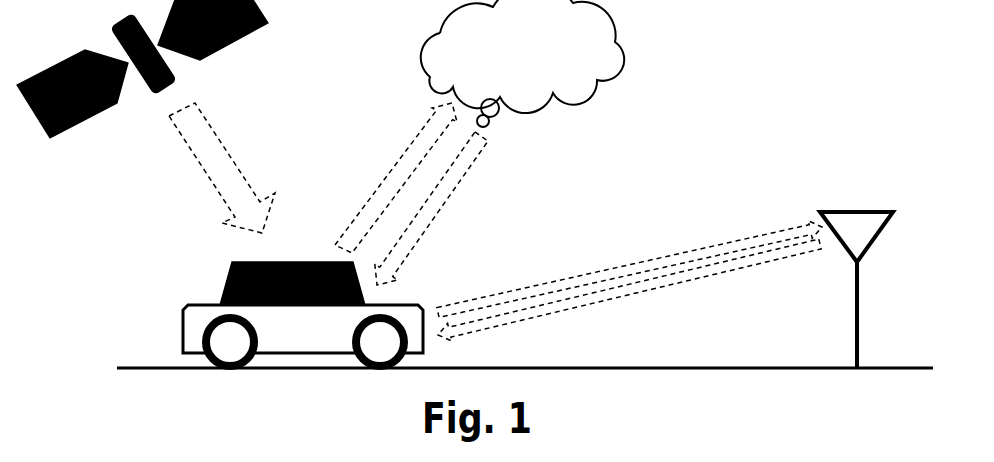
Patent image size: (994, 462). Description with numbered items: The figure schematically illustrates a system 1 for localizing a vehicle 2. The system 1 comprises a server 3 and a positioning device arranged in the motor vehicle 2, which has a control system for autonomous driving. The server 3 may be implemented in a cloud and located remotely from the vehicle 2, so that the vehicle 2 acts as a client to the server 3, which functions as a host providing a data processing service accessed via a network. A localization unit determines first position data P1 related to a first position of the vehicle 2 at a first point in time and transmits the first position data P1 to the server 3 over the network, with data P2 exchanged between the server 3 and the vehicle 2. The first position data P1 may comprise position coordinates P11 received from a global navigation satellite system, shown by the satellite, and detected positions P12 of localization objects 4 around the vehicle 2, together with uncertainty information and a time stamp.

The system 1 is at (363, 50).
The vehicle 2 is at (303, 314).
The server 3 is at (522, 63).
The localization objects 4 is at (856, 290).
The first position data P1 is at (396, 178).
The downlink signal path from cloud P2 is at (431, 208).
The position coordinates P11 is at (207, 168).
The detected positions P12 is at (629, 281).